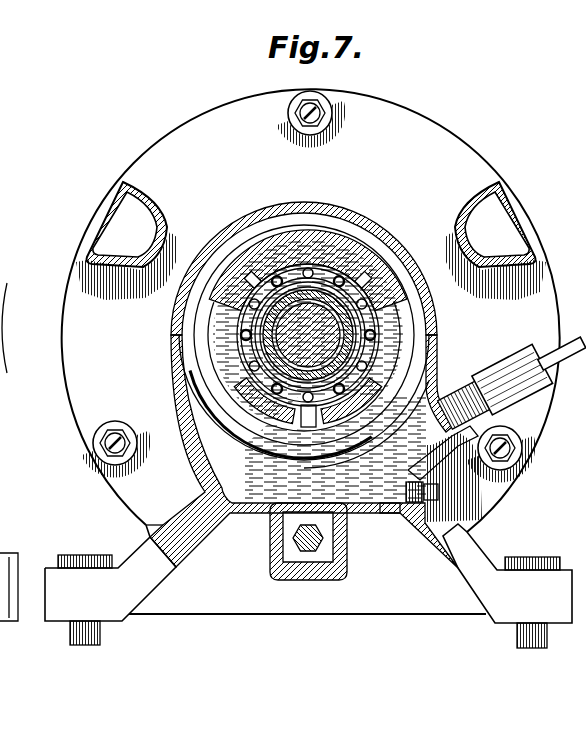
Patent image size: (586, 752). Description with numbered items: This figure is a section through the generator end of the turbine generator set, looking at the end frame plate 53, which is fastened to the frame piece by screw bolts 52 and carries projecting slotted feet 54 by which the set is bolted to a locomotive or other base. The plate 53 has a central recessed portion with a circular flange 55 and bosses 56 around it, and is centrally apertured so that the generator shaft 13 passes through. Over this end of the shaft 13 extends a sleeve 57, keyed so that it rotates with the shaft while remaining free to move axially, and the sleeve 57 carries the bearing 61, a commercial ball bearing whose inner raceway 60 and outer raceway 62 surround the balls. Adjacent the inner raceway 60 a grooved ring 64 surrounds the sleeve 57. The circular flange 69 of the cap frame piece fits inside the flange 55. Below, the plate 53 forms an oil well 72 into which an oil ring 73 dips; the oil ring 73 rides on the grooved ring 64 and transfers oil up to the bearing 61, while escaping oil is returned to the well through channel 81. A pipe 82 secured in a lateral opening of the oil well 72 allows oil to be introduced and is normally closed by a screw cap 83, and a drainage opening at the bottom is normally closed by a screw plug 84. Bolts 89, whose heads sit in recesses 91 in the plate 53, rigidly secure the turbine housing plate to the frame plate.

The shaft 13 is at (300, 318).
The screw bolts 52 is at (322, 109).
The end frame plate 53 is at (436, 157).
The slotted feet 54 is at (113, 604).
The circular flange 55 is at (197, 345).
The bosses 56 is at (316, 427).
The sleeve 57 is at (335, 270).
The inner raceway 60 is at (375, 313).
The bearing 61 is at (376, 343).
The outer raceway 62 is at (373, 293).
The grooved ring 64 is at (394, 410).
The circular flange 69 is at (237, 280).
The oil well 72 is at (355, 492).
The oil ring 73 is at (290, 445).
The channel 81 is at (282, 471).
The pipe 82 is at (448, 387).
The screw cap 83 is at (500, 378).
The screw plug 84 is at (407, 486).
The bolts 89 is at (313, 556).
The recesses 91 is at (118, 229).